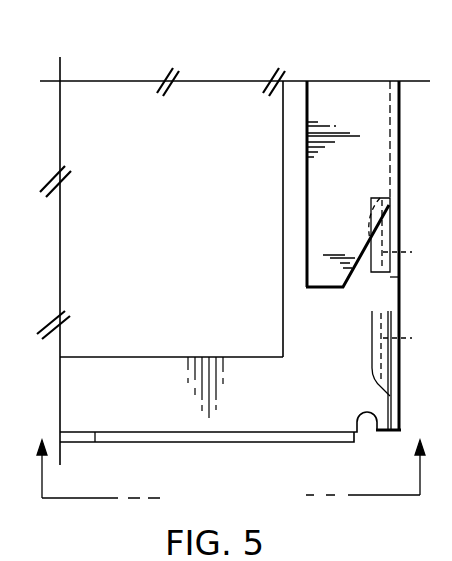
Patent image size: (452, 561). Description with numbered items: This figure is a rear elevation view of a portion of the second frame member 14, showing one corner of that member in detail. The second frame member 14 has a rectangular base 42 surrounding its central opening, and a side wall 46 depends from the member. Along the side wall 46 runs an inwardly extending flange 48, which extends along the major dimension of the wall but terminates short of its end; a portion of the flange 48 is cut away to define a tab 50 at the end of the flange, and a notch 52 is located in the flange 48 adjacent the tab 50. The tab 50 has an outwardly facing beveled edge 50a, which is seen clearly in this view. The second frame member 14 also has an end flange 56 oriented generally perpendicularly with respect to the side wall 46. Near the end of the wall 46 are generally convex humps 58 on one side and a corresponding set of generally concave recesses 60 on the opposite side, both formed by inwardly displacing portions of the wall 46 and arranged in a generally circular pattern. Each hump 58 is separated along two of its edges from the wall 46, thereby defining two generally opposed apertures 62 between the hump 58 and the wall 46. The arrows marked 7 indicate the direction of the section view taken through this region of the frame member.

The second frame member 14 is at (142, 78).
The rectangular base 42 is at (110, 378).
The inwardly extending flange 48 is at (346, 106).
The notch 52 is at (308, 155).
The tab 50 is at (318, 268).
The beveled edge 50a is at (349, 290).
The side wall 46 is at (412, 130).
The concave recess 60 is at (400, 215).
The aperture 62 is at (408, 252).
The convex hump 58 is at (372, 374).
The end flange 56 is at (157, 440).
The section line 7- 7 is at (230, 454).